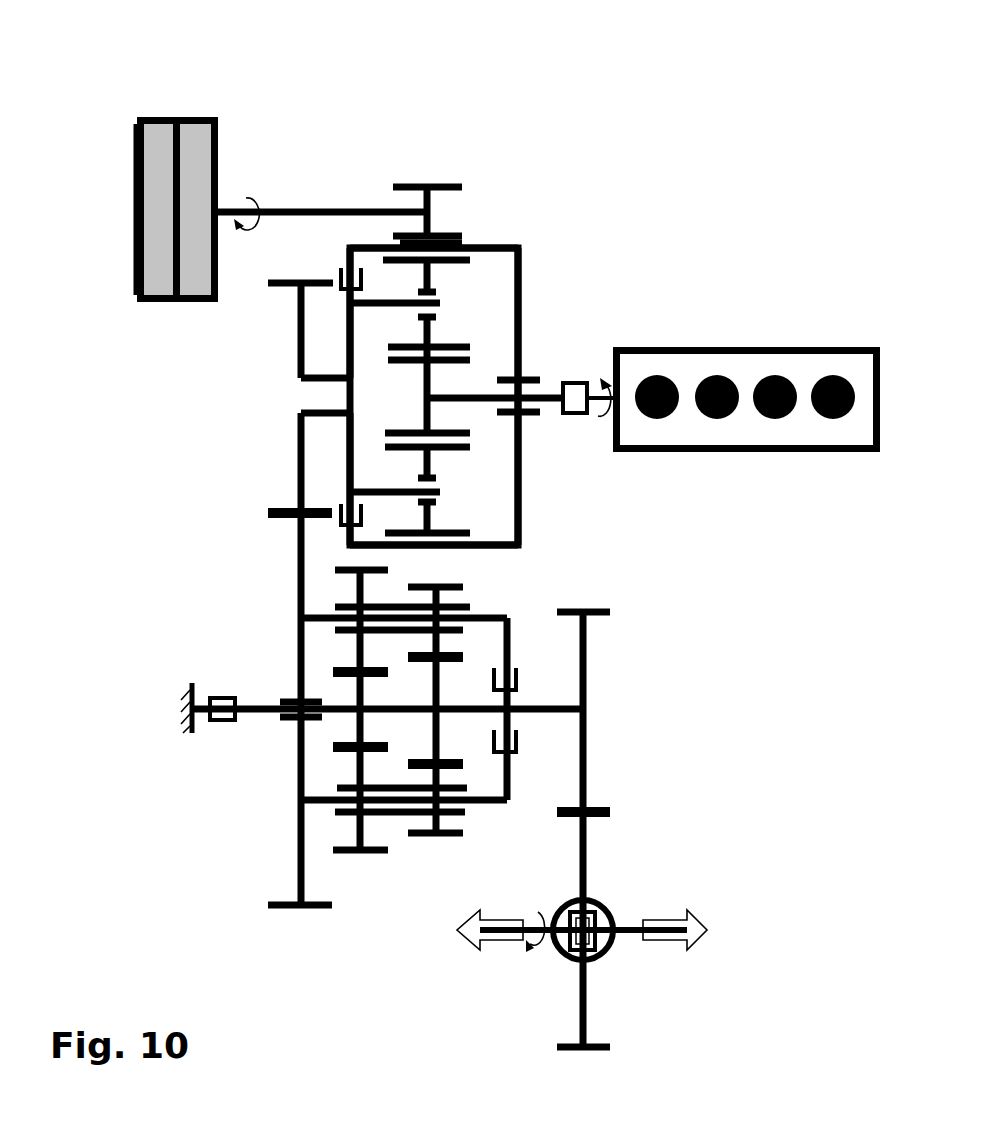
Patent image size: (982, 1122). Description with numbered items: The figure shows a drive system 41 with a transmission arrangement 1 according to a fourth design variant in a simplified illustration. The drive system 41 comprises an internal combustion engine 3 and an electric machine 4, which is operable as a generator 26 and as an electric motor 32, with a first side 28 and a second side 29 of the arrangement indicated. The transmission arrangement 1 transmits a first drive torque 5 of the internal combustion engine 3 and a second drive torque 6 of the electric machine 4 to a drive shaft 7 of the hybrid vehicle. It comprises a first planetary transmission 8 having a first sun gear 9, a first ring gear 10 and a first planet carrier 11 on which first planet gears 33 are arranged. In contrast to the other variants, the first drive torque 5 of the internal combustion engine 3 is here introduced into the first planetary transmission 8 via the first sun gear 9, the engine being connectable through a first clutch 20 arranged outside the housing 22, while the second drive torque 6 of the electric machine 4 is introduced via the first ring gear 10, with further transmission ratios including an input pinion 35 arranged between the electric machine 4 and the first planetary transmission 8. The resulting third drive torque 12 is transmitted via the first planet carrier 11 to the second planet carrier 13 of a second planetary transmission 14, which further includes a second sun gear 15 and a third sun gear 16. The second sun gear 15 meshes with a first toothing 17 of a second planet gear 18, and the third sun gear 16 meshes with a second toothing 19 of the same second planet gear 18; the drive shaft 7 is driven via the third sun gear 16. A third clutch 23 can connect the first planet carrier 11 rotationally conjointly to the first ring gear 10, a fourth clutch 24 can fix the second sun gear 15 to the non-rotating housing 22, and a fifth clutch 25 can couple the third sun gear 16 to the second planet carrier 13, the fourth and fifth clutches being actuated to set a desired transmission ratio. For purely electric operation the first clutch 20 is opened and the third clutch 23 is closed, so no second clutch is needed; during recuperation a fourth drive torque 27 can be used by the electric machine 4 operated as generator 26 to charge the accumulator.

The transmission arrangement 1 is at (540, 258).
The internal combustion engine 3 is at (768, 432).
The electric machine 4 is at (157, 285).
The first drive torque 5 is at (600, 380).
The second drive torque 6 is at (240, 228).
The drive shaft 7 is at (670, 918).
The first planetary transmission 8 is at (336, 190).
The first sun gear 9 is at (427, 396).
The first ring gear 10 is at (520, 305).
The first planet carrier 11 is at (300, 335).
The third drive torque 12 is at (300, 467).
The second planet carrier 13 is at (300, 574).
The second planetary transmission 14 is at (528, 594).
The second sun gear 15 is at (355, 692).
The third sun gear 16 is at (437, 678).
The first toothing 17 is at (358, 566).
The second planet gear 18 is at (463, 607).
The second toothing 19 is at (436, 836).
The first clutch 20 is at (572, 418).
The housing 22 is at (188, 688).
The third clutch 23 is at (340, 277).
The fourth clutch 24 is at (222, 722).
The fifth clutch 25 is at (518, 676).
The generator 26 is at (137, 145).
The fourth drive torque 27 is at (538, 916).
The first side 28 is at (270, 138).
The second side 29 is at (645, 243).
The electric motor 32 is at (137, 210).
The first planet gear 33 is at (437, 297).
The input pinion 35 is at (395, 186).
The drive system 41 is at (645, 176).